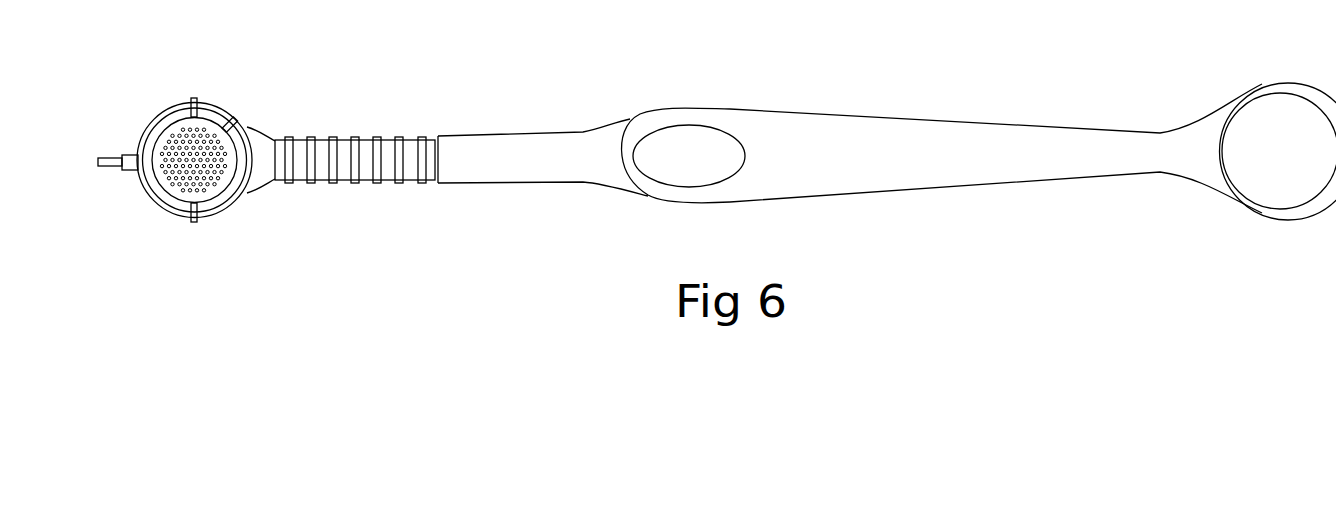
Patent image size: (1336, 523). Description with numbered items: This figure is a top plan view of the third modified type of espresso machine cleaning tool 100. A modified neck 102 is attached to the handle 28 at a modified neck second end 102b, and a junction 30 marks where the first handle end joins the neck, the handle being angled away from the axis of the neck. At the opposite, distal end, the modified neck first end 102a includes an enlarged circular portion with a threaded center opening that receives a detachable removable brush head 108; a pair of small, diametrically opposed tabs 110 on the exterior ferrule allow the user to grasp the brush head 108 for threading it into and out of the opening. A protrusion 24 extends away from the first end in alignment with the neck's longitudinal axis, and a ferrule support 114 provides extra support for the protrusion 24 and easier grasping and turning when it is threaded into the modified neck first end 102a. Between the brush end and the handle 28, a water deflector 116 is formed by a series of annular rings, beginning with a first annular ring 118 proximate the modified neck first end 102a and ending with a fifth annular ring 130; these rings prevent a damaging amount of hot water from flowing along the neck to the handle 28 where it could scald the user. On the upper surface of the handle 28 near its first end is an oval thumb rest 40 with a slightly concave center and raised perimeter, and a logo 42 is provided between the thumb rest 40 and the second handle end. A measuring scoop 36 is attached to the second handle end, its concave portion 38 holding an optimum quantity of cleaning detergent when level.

The third modified espresso machine cleaning tool 100 is at (700, 164).
The handle 28 is at (971, 151).
The junction 30 is at (626, 135).
The thumb rest 40 is at (687, 145).
The logo 42 is at (865, 148).
The measuring scoop 36 is at (1262, 218).
The concave portion 38 is at (1271, 148).
The modified neck 102 is at (362, 164).
The modified neck first end 102a is at (250, 185).
The modified neck second end 102b is at (552, 163).
The water deflector 116 is at (412, 130).
The first annular ring 118 is at (287, 181).
The fifth annular ring 130 is at (421, 137).
The tabs 110 is at (192, 100).
The removable brush head 108 is at (289, 93).
The ferrule support 114 is at (131, 145).
The protrusion 24 is at (115, 168).